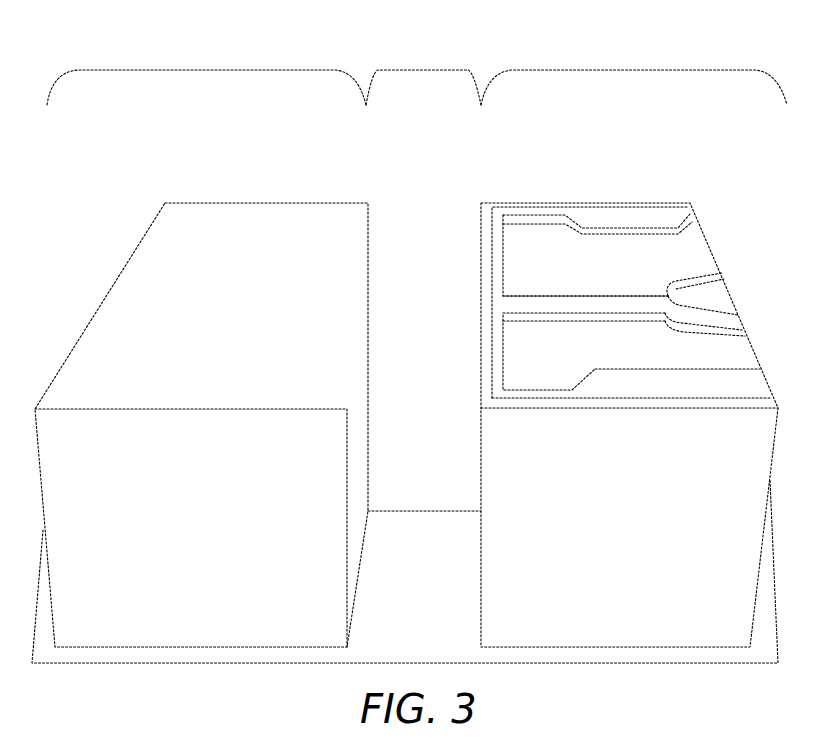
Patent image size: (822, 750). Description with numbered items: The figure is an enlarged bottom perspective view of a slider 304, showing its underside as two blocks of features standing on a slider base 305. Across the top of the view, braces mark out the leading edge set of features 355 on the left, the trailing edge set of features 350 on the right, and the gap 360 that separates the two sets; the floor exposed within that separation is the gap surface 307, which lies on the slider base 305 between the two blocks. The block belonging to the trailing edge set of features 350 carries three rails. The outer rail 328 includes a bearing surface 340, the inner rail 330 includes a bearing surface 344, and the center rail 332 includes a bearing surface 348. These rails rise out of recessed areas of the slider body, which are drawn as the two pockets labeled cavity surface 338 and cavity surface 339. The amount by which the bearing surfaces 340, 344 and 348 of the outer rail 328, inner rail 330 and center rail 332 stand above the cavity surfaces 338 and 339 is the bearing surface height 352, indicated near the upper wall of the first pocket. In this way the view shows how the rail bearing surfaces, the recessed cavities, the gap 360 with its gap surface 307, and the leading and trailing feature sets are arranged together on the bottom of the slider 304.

The slider 304 is at (247, 191).
The slider base 305 is at (573, 655).
The gap surface 307 is at (412, 618).
The outer rail 328 is at (659, 219).
The inner rail 330 is at (703, 391).
The center rail 332 is at (711, 319).
The cavity surface 338 is at (567, 288).
The cavity surface 339 is at (566, 356).
The bearing surface 340 is at (592, 203).
The bearing surface 344 is at (618, 385).
The bearing surface 348 is at (628, 305).
The trailing edge set of features 350 is at (634, 70).
The bearing surface height 352 is at (520, 218).
The leading edge set of features 355 is at (206, 70).
The gap 360 is at (383, 360).